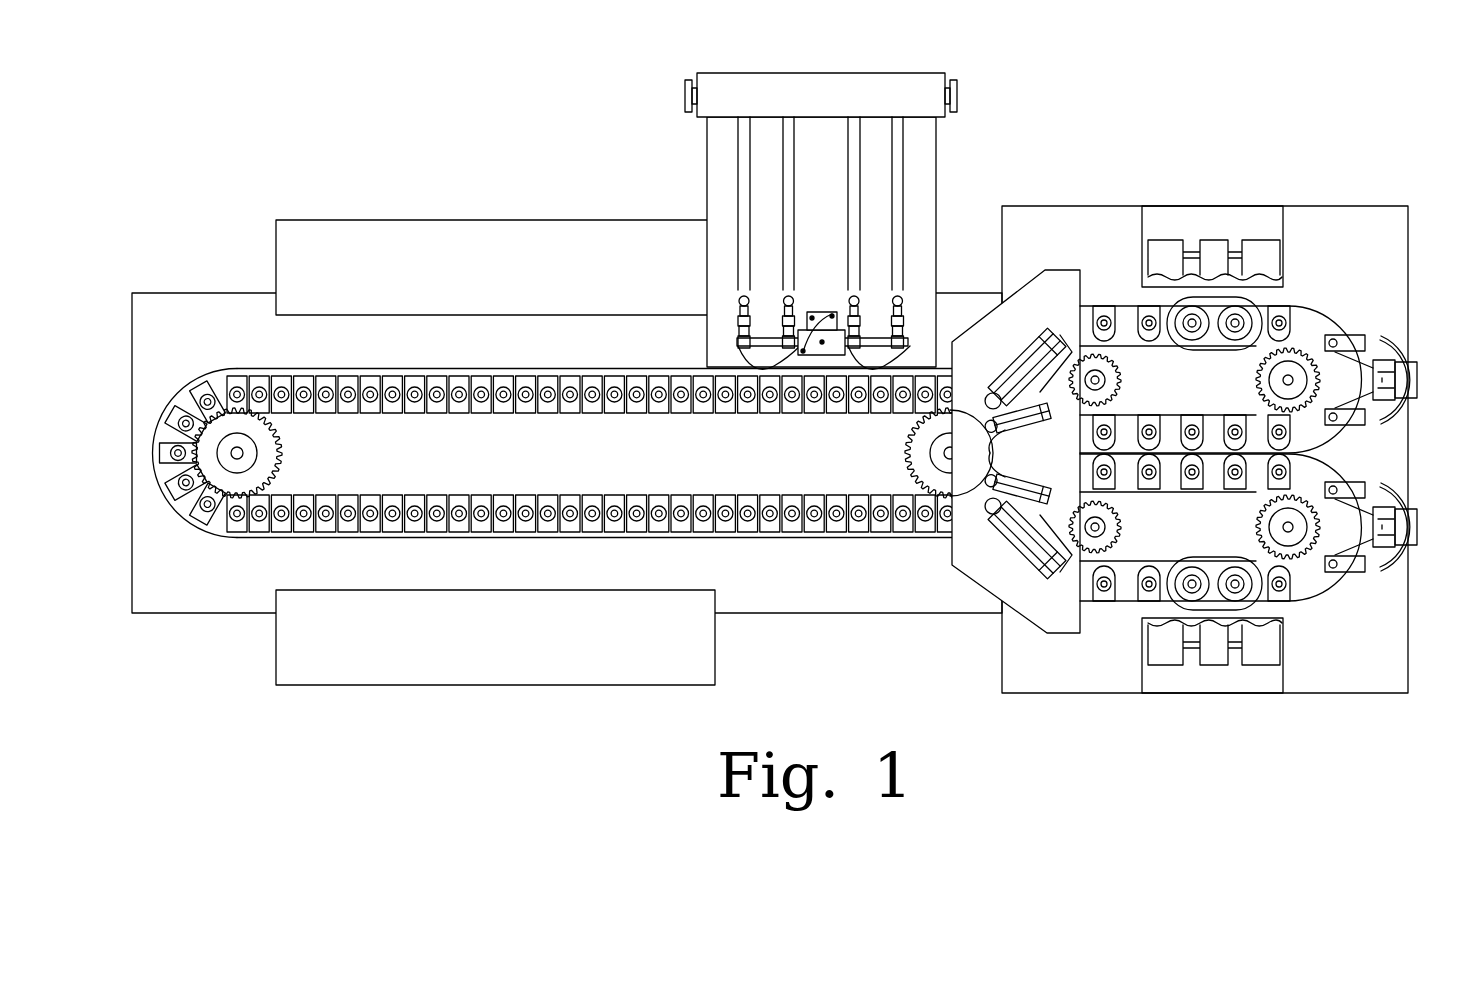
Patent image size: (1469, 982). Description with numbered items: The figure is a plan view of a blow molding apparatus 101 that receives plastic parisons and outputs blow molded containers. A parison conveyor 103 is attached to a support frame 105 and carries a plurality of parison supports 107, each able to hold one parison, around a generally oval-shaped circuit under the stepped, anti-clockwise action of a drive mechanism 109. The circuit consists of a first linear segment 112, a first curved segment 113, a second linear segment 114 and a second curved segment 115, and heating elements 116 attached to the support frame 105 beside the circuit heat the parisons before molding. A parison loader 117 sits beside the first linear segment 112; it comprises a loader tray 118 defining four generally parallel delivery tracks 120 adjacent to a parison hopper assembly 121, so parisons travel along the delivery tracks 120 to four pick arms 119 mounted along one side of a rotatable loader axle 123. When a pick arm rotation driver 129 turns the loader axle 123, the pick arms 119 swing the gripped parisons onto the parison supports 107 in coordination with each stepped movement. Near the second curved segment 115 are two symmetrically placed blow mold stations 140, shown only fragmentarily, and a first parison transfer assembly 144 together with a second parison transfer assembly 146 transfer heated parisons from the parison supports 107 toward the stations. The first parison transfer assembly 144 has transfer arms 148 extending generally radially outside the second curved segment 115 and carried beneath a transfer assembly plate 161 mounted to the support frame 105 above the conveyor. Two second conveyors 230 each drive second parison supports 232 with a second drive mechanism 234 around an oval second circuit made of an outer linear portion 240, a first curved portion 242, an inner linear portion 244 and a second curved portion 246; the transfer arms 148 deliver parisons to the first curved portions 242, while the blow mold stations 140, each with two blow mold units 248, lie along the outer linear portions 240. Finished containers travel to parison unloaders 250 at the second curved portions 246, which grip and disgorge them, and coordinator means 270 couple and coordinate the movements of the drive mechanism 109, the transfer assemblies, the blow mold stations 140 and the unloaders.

The blow molding apparatus 101 is at (603, 163).
The parison conveyor 103 is at (204, 394).
The support frame 105 is at (245, 613).
The parison supports 107 is at (206, 520).
The drive mechanism 109 is at (282, 452).
The first linear segment 112 is at (310, 369).
The first curved segment 113 is at (148, 428).
The second linear segment 114 is at (681, 540).
The second curved segment 115 is at (976, 453).
The heating elements 116 is at (432, 220).
The parison loader 117 is at (850, 203).
The loader tray 118 is at (920, 233).
The pick arms 119 is at (766, 325).
The delivery tracks 120 is at (741, 219).
The parison hopper assembly 121 is at (947, 72).
The loader axle 123 is at (738, 341).
The pick arm rotation driver 129 is at (822, 312).
The blow mold stations 140 is at (1306, 288).
The first parison transfer assembly 144 is at (952, 558).
The second parison transfer assembly 146 is at (1298, 336).
The transfer arms 148 is at (1020, 368).
The transfer assembly plate 161 is at (1066, 270).
The second conveyors 230 is at (1095, 304).
The second parison supports 232 is at (1117, 305).
The second drive mechanism 234 is at (1260, 393).
The outer linear portion 240 is at (1151, 602).
The first curved portion 242 is at (1079, 305).
The inner linear portion 244 is at (1162, 336).
The second curved portion 246 is at (1378, 330).
The blow mold units 248 is at (1200, 350).
The parison unloaders 250 is at (1408, 350).
The coordinator means 270 is at (1392, 650).